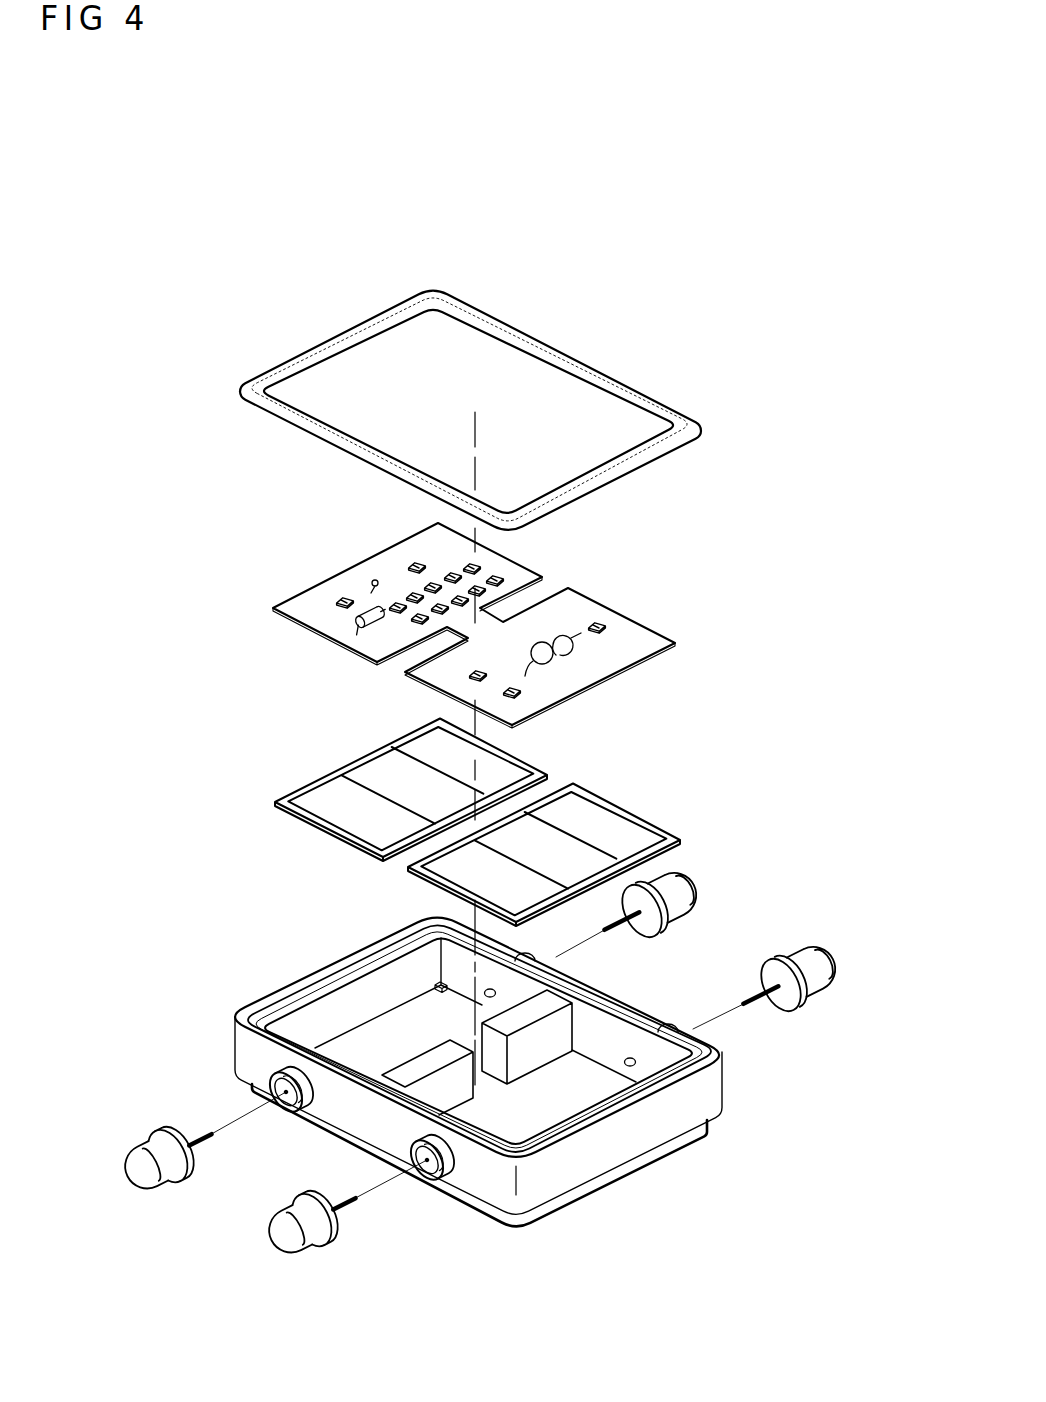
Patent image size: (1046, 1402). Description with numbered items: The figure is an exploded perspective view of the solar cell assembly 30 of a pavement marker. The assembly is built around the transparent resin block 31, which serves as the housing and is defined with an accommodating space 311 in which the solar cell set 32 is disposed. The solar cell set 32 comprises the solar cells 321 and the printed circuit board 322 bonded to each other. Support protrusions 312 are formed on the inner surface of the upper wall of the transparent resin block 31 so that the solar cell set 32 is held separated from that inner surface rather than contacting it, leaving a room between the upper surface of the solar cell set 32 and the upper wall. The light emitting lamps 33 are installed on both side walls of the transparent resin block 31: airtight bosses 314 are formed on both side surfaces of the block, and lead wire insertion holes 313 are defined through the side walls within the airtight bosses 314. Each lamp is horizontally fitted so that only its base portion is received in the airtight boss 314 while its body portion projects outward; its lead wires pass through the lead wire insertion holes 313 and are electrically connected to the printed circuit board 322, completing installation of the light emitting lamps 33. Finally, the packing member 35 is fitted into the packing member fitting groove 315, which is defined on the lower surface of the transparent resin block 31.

The solar cell assembly 30 is at (593, 296).
The transparent resin block 31 is at (482, 1098).
The accommodating space 311 is at (570, 1082).
The support protrusions 312 is at (444, 984).
The lead wire insertion holes 313 is at (425, 1180).
The airtight bosses 314 is at (463, 1178).
The packing member fitting groove 315 is at (278, 998).
The solar cell set 32 is at (798, 730).
The solar cells 321 is at (642, 830).
The printed circuit board 322 is at (596, 673).
The light emitting lamps 33 is at (692, 886).
The packing member 35 is at (700, 421).